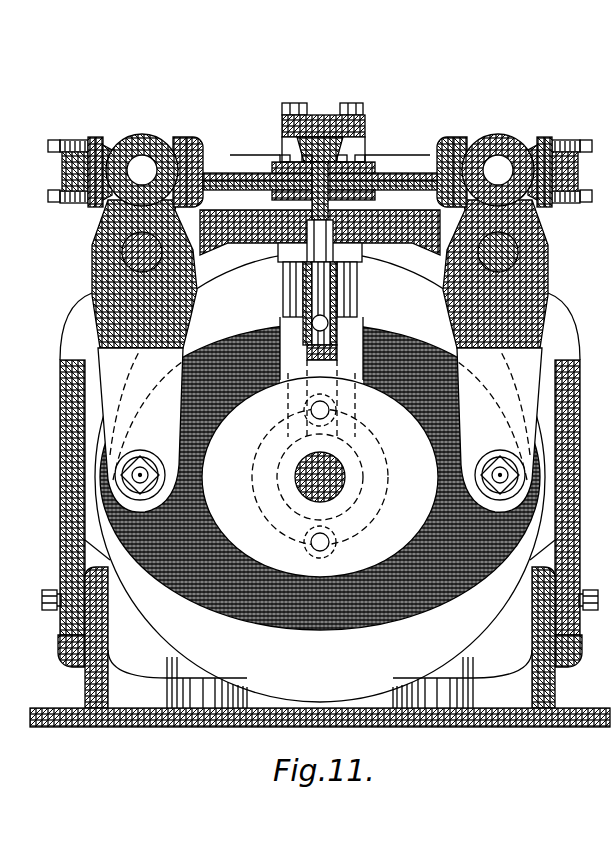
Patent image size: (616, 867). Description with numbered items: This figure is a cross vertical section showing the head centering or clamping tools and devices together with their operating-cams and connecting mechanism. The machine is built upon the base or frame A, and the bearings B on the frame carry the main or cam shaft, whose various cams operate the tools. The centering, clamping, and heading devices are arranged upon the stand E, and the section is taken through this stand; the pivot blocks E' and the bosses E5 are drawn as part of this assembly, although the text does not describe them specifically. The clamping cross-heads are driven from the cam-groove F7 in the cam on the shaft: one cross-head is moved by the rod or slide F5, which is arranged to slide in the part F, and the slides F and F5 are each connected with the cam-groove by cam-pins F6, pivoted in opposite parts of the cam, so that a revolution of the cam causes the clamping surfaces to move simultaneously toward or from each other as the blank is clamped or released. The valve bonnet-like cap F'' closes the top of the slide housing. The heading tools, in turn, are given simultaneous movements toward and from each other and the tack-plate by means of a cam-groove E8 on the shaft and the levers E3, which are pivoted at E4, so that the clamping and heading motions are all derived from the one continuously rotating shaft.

The base or frame A is at (140, 696).
The bearings B is at (132, 662).
The stand E is at (318, 452).
The pivot blocks E' is at (321, 163).
The levers E3 is at (320, 235).
The lever pivot E4 is at (563, 243).
The pivot boss E5 is at (526, 136).
The cam-groove E8 is at (376, 300).
The part or slide F is at (304, 261).
The valve bonnet F'' is at (330, 151).
The rod or slide F5 is at (330, 325).
The cam-pins F6 is at (325, 414).
The cam-groove F7 is at (402, 453).